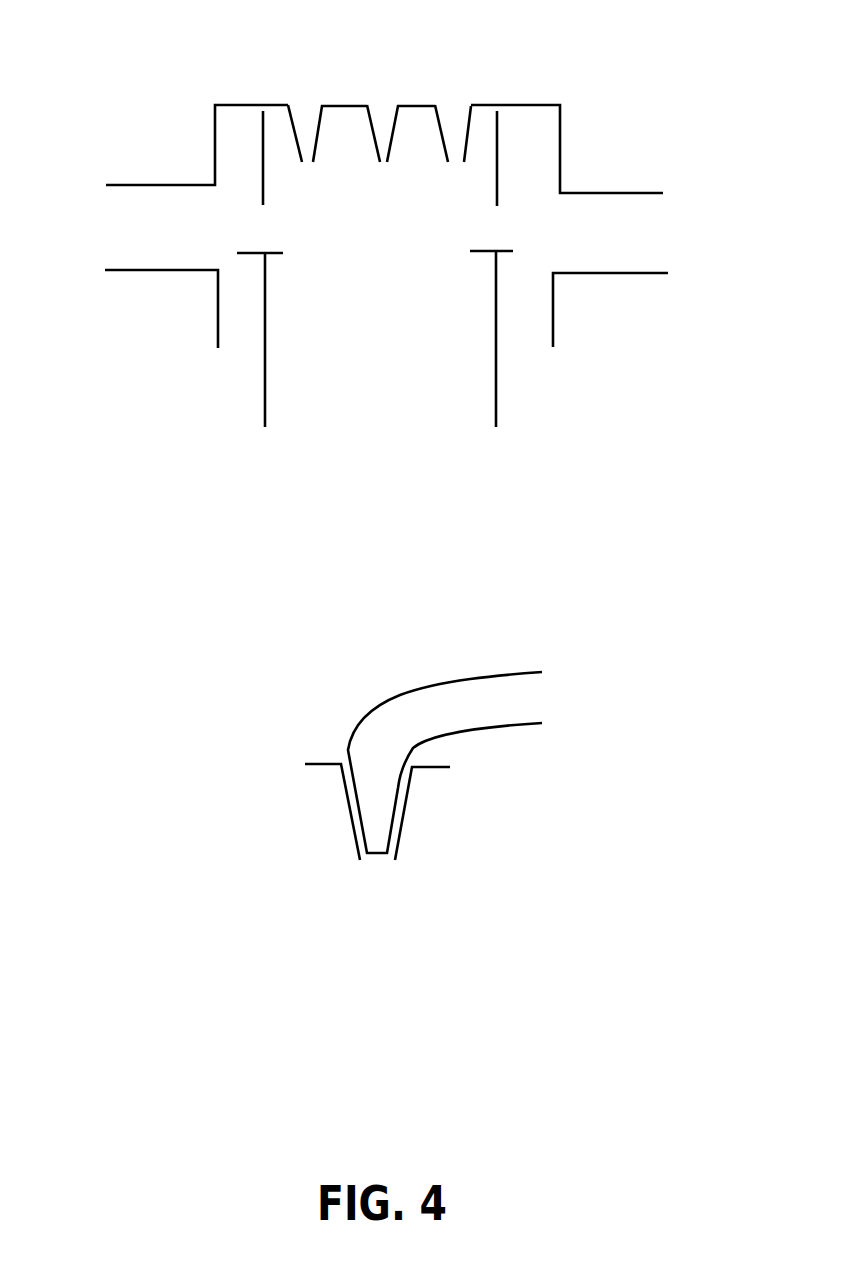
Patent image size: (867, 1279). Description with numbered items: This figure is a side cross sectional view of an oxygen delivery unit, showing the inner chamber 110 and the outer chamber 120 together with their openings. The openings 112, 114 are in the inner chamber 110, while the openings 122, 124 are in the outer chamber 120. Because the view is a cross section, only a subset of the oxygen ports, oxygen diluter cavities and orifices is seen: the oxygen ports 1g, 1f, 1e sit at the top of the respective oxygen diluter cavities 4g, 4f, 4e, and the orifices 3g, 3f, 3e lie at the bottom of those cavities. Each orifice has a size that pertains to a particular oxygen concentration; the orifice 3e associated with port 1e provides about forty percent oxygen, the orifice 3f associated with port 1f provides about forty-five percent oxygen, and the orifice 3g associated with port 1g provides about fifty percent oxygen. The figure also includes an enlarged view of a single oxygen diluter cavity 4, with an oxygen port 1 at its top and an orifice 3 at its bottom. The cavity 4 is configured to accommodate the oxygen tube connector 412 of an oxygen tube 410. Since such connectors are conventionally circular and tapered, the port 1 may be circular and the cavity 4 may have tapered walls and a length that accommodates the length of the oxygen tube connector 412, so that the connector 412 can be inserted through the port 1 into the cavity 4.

The opening 122 is at (118, 186).
The opening 124 is at (641, 194).
The outer chamber 120 is at (218, 317).
The inner chamber 110 is at (497, 394).
The opening 112 is at (263, 246).
The opening 114 is at (489, 236).
The oxygen port 1g is at (296, 106).
The oxygen diluter cavity 4g is at (305, 120).
The orifice 3g is at (307, 157).
The oxygen port 1f is at (382, 115).
The oxygen diluter cavity 4f is at (389, 125).
The orifice 3f is at (380, 157).
The oxygen port 1e is at (457, 118).
The oxygen diluter cavity 4e is at (453, 128).
The orifice 3e is at (455, 158).
The oxygen tube 410 is at (510, 672).
The oxygen tube connector 412 is at (362, 792).
The oxygen port 1 is at (341, 758).
The oxygen diluter cavity 4 is at (398, 811).
The orifice 3 is at (377, 865).